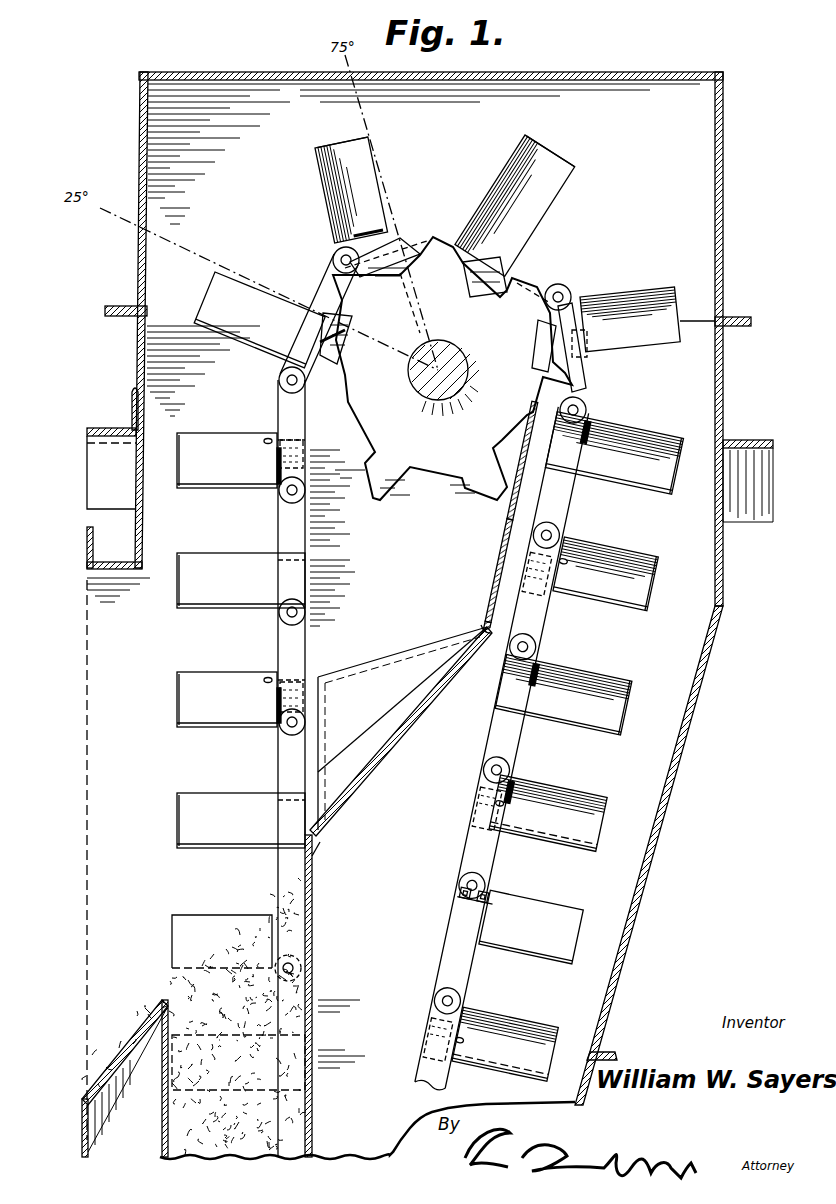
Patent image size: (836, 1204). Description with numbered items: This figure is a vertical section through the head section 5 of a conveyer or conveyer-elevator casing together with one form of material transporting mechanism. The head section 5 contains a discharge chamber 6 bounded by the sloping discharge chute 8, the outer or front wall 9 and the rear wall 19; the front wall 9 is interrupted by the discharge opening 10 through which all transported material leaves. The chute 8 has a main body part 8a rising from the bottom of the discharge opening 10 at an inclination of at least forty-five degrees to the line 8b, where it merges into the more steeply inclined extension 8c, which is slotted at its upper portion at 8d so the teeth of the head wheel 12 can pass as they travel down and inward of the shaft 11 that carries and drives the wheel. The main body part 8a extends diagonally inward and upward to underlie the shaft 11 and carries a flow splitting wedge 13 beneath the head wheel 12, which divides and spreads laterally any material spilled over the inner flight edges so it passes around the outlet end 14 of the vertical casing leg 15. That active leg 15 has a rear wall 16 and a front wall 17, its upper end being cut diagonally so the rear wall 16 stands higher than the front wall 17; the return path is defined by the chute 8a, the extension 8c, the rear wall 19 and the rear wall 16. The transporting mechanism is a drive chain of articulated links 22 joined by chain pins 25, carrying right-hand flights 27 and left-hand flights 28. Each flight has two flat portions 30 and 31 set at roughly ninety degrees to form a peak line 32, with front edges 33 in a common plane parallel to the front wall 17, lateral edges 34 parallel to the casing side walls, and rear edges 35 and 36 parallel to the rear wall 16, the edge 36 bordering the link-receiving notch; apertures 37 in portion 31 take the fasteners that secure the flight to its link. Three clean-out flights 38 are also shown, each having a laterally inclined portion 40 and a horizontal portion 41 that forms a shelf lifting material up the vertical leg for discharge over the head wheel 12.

The head section of a casing 5 is at (645, 893).
The discharge chamber 6 is at (386, 581).
The sloping discharge chute 8 is at (318, 832).
The main body part of the discharge chute 8a is at (124, 1050).
The line 8b is at (482, 628).
The discharge chute extension 8c is at (497, 568).
The slot 8d is at (521, 469).
The outer or front wall 9 is at (135, 385).
The discharge opening 10 is at (87, 760).
The shaft 11 is at (455, 348).
The head wheel 12 is at (452, 368).
The flow splitting wedge 13 is at (377, 749).
The outlet end 14 is at (176, 990).
The vertical casing leg 15 is at (156, 1153).
The rear wall 16 is at (314, 1068).
The front wall 17 is at (162, 1088).
The rear wall of the casing head section 19 is at (672, 797).
The articulated links 22 is at (505, 722).
The chain pin 25 is at (560, 528).
The right-hand flights 27 is at (504, 165).
The left-hand flights 28 is at (317, 198).
The flat portion 30 is at (240, 590).
The flat portion 31 is at (230, 470).
The ridge or peak line 32 is at (220, 433).
The outer or front edges 33 is at (344, 140).
The side or lateral edges 34 is at (332, 222).
The inner or rear edge 35 is at (340, 368).
The inner or rear edge 36 is at (280, 478).
The apertures 37 is at (374, 672).
The clean-out flights 38 is at (592, 856).
The laterally inclined flat portion 40 is at (580, 800).
The horizontally arranged flat portion 41 is at (562, 838).